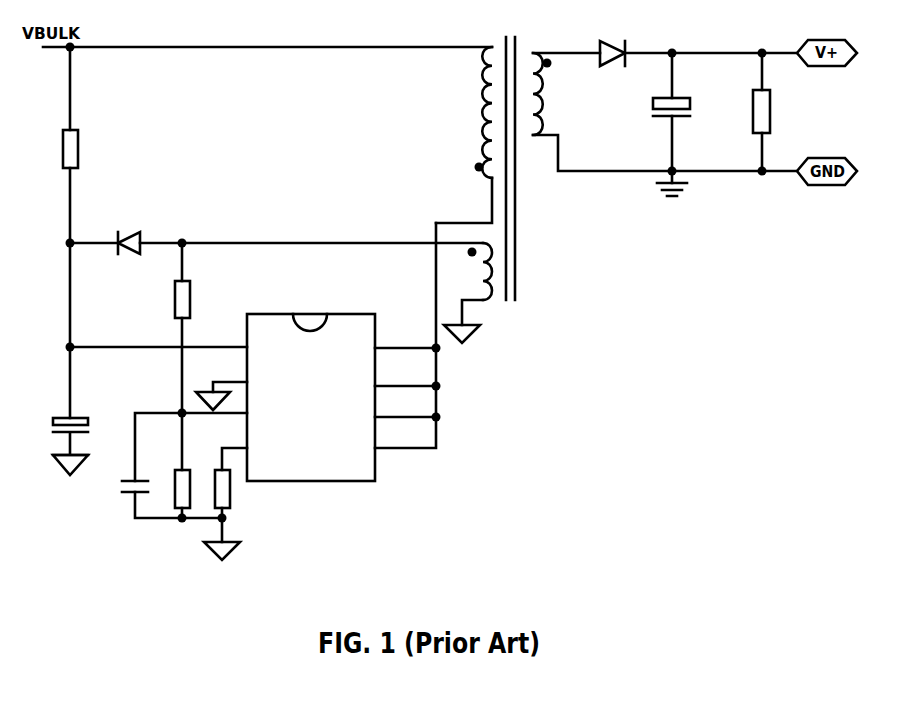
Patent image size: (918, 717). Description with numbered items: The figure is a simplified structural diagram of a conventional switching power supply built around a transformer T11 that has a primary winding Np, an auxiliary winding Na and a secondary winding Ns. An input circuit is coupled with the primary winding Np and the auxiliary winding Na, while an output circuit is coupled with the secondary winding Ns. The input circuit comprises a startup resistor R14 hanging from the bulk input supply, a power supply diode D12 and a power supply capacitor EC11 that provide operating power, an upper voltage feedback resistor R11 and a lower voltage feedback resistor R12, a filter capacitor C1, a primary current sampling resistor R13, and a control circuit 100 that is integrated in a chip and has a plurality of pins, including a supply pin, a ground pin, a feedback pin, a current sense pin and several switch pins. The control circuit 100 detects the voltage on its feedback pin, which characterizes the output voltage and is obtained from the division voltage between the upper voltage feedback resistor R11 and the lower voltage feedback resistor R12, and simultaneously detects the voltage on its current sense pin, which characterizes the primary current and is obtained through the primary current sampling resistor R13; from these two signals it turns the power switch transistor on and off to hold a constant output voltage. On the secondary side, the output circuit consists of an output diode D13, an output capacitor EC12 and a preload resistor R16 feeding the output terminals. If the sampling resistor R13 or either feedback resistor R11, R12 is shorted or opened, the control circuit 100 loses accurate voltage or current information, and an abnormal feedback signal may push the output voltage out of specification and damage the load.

The control circuit 100 is at (328, 488).
The startup resistor R14 is at (85, 149).
The power supply diode D12 is at (131, 233).
The upper voltage feedback resistor R11 is at (196, 299).
The power supply capacitor EC11 is at (50, 446).
The filter capacitor C1 is at (125, 487).
The lower voltage feedback resistor R12 is at (194, 476).
The primary current sampling resistor R13 is at (237, 489).
The transformer T11 is at (507, 157).
The primary winding Np is at (472, 112).
The secondary winding Ns is at (547, 94).
The auxiliary winding Na is at (472, 271).
The output diode D13 is at (615, 44).
The output capacitor EC12 is at (695, 106).
The preload resistor R16 is at (780, 111).